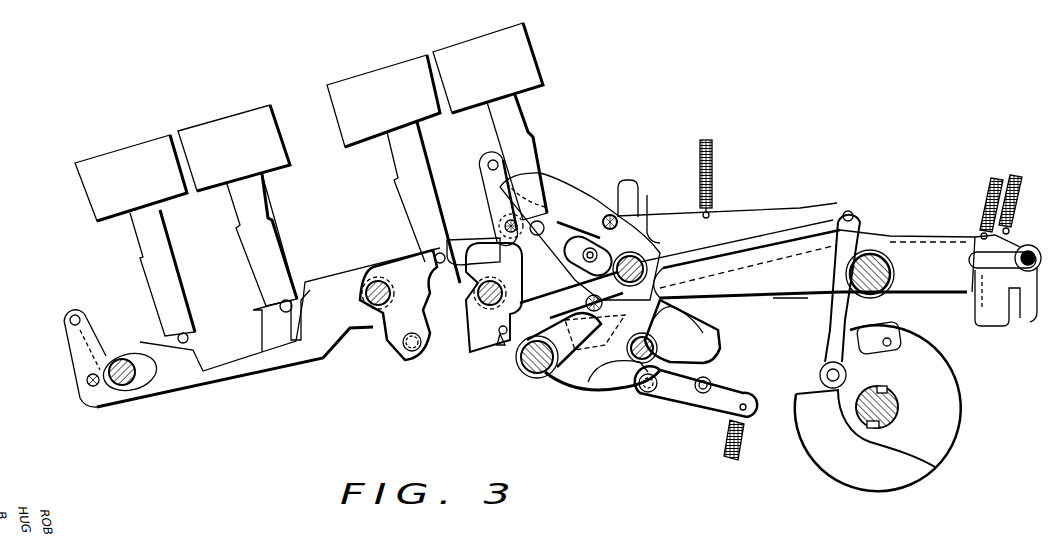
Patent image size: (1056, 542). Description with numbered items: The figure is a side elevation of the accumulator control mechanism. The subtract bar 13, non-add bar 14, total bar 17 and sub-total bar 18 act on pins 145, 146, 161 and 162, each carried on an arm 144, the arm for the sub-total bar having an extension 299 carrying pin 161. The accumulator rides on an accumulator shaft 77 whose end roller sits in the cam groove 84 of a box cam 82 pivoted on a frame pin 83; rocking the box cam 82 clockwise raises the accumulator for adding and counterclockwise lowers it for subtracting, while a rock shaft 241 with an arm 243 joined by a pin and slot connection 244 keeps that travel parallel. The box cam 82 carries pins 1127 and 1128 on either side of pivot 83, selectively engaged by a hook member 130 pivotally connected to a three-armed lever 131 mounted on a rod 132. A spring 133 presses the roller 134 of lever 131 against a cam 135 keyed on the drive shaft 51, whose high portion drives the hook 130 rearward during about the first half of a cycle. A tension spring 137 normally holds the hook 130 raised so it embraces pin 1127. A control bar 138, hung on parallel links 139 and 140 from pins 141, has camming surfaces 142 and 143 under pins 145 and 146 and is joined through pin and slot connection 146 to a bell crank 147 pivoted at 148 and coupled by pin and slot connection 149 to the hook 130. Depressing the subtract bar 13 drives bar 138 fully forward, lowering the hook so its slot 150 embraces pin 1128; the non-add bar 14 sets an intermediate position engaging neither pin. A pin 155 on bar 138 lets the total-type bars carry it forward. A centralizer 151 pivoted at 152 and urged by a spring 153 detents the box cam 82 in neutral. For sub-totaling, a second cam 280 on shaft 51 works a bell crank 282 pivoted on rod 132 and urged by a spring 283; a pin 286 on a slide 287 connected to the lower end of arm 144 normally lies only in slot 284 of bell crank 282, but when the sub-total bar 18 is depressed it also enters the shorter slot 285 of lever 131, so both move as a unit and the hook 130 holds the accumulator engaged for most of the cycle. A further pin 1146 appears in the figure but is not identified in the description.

The subtract bar 13 is at (130, 148).
The non-add bar 14 is at (245, 116).
The total bar 17 is at (498, 36).
The sub-total bar 18 is at (395, 68).
The drive shaft 51 is at (897, 408).
The accumulator shaft 77 is at (590, 385).
The box cam 82 is at (720, 340).
The frame pin 83 is at (645, 262).
The cam groove 84 is at (592, 365).
The hook member 130 is at (742, 212).
The three-armed lever 131 is at (908, 250).
The rod 132 is at (878, 225).
The spring 133 is at (990, 182).
The roller 134 is at (820, 375).
The cam 135 is at (930, 355).
The tension spring 137 is at (714, 180).
The control bar 138 is at (297, 370).
The link 139 is at (94, 342).
The link 140 is at (483, 180).
The pins 141 is at (76, 314).
The camming surface 142 is at (178, 372).
The camming surface 143 is at (262, 318).
The arm 144 is at (385, 342).
The pin 145 is at (212, 332).
The pin 146 is at (304, 288).
The bell crank 147 is at (503, 276).
The pivot 148 is at (445, 345).
The pin and slot connection 149 is at (572, 244).
The slot 150 is at (702, 250).
The centralizer 151 is at (696, 398).
The pivot 152 is at (712, 376).
The spring 153 is at (724, 435).
The pin 155 is at (612, 192).
The pin 161 is at (492, 205).
The pin 162 is at (562, 203).
The rock shaft 241 is at (530, 370).
The arm 243 is at (592, 333).
The pin and slot connection 244 is at (535, 380).
The second cam 280 is at (848, 472).
The bell crank 282 is at (866, 252).
The spring 283 is at (1012, 172).
The slot 284 is at (1005, 310).
The slot 285 is at (968, 296).
The pin 286 is at (1037, 345).
The slide 287 is at (791, 288).
The extension 299 is at (435, 252).
The pin 1127 is at (640, 203).
The pin 1128 is at (665, 290).
The pin 1146 is at (500, 348).